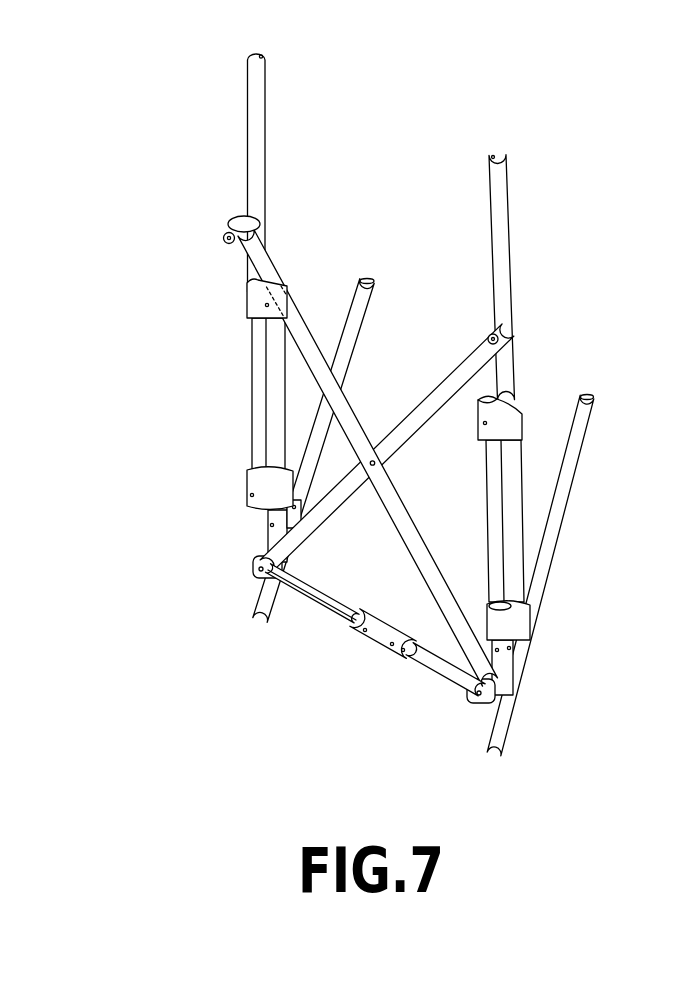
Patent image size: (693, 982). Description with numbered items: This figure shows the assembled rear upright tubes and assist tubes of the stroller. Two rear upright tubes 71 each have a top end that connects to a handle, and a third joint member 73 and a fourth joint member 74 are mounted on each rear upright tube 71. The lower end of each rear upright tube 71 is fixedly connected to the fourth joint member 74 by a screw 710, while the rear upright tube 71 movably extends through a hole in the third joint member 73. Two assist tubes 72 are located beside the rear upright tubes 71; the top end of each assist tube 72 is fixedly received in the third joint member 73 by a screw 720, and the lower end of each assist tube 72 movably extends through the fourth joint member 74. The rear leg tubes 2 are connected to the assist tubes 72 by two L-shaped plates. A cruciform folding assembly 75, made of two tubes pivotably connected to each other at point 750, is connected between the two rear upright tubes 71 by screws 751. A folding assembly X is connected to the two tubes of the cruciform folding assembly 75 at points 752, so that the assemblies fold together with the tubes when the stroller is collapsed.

The rear leg tube 2 is at (258, 608).
The rear upright tube 71 is at (257, 346).
The assist tube 72 is at (273, 410).
The third joint member 73 is at (250, 301).
The fourth joint member 74 is at (253, 512).
The cruciform folding assembly 75 is at (308, 530).
The screw 710 is at (257, 502).
The screw 720 is at (290, 314).
The pivot point 750 is at (372, 467).
The screw 751 is at (490, 336).
The connection point 752 is at (257, 575).
The folding assembly X is at (343, 617).